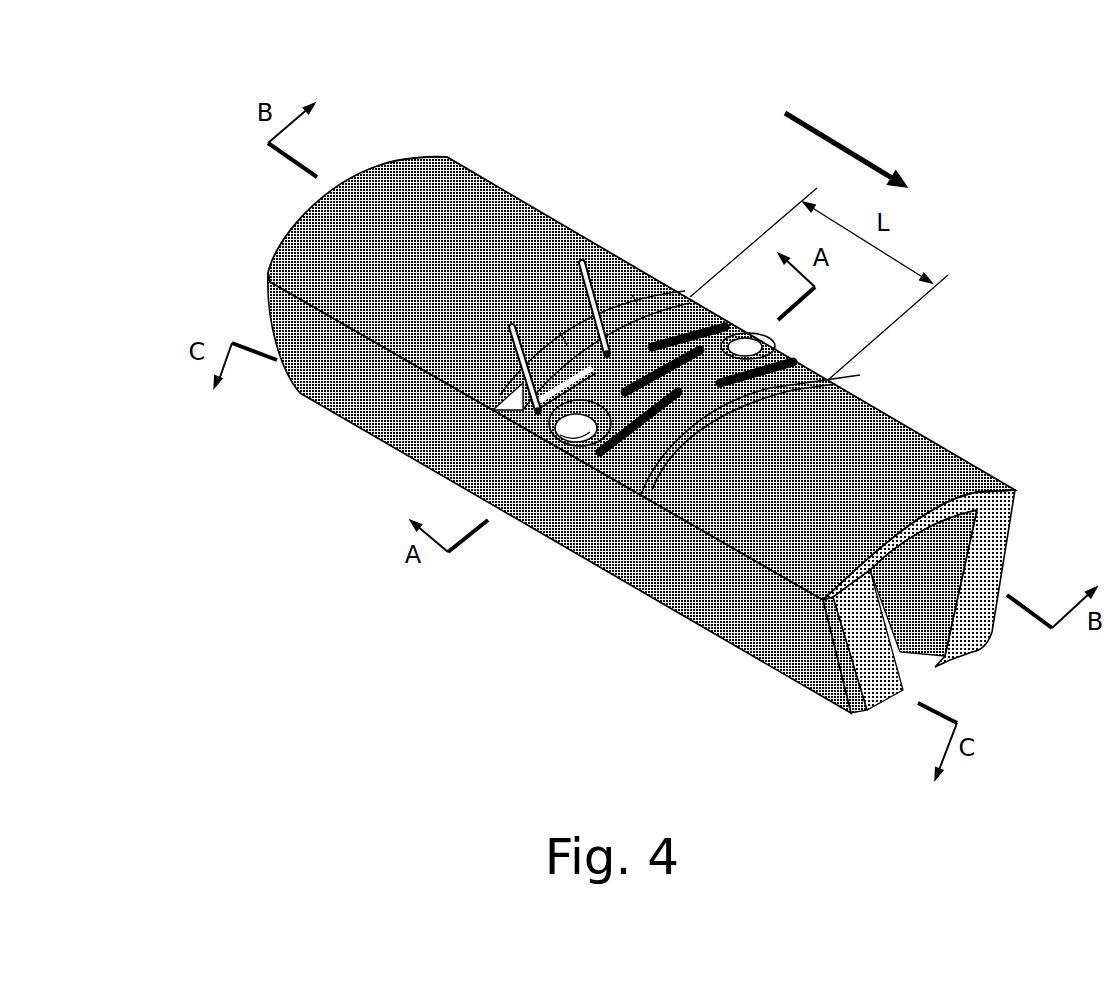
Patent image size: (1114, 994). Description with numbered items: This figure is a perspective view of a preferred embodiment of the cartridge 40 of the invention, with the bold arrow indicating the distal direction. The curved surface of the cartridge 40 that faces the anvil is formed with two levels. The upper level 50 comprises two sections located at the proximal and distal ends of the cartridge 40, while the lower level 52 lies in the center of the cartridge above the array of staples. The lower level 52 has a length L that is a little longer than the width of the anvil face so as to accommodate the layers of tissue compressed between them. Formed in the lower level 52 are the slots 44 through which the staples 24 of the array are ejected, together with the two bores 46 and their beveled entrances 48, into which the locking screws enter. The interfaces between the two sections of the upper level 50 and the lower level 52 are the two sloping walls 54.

The cartridge 40 is at (905, 350).
The upper level 50 is at (473, 187).
The staples 24 is at (590, 270).
The sloping walls 54 is at (665, 290).
The lower level 52 is at (654, 450).
The beveled entrances 48 is at (560, 432).
The bores 46 is at (583, 440).
The slots 44 is at (613, 458).